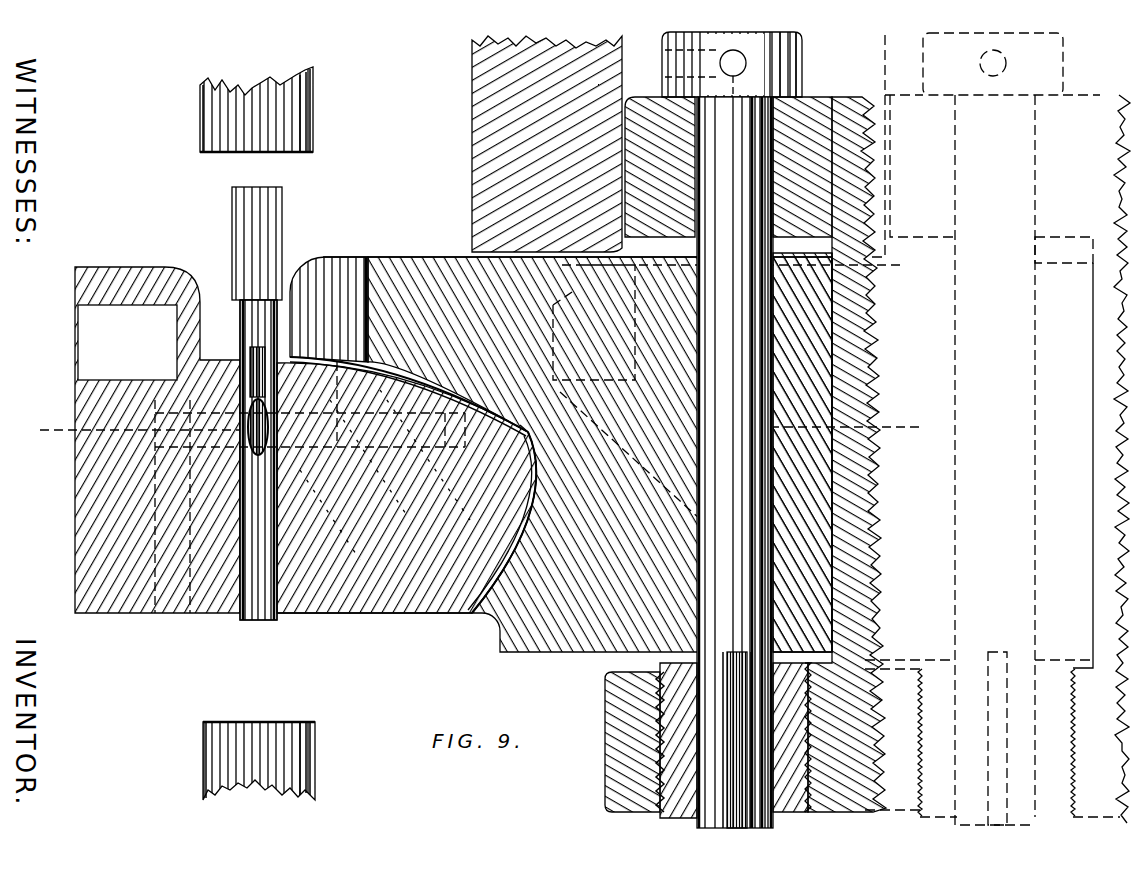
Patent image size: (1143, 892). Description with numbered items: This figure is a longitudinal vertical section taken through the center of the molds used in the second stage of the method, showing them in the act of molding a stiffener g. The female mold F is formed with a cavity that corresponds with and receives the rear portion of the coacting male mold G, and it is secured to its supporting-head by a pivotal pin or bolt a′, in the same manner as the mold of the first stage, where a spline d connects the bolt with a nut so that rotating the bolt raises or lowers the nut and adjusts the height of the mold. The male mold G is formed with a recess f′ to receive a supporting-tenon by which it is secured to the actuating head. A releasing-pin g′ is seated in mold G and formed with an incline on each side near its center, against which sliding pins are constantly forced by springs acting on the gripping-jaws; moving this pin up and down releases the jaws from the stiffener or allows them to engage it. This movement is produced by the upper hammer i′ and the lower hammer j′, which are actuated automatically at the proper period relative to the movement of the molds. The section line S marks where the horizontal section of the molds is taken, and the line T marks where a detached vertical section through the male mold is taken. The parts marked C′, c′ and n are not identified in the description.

The upper hammer i′ is at (313, 118).
The lower hammer j′ is at (313, 757).
The section line T T is at (262, 85).
The recess f′ is at (157, 440).
The releasing-pin g′ is at (283, 238).
The male mold G is at (366, 608).
The stiffener g is at (521, 415).
The female mold F is at (440, 266).
The section line s s S is at (477, 430).
The clamp block C′ is at (475, 118).
The pivotal pin or bolt a′ is at (664, 48).
The spline d is at (735, 473).
The stud sleeve c′ is at (790, 818).
The threaded nut / sleeve n is at (822, 110).